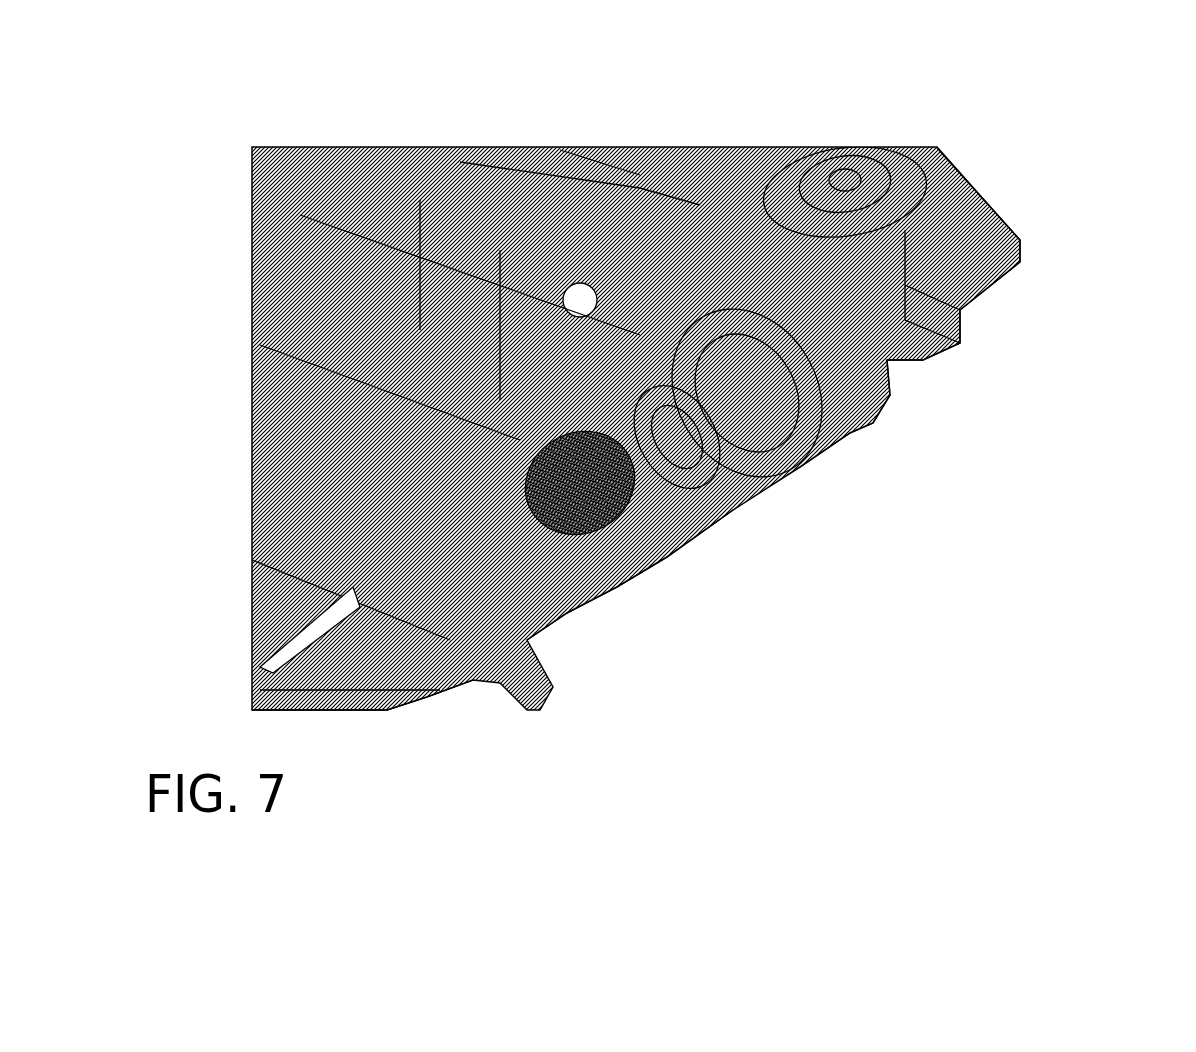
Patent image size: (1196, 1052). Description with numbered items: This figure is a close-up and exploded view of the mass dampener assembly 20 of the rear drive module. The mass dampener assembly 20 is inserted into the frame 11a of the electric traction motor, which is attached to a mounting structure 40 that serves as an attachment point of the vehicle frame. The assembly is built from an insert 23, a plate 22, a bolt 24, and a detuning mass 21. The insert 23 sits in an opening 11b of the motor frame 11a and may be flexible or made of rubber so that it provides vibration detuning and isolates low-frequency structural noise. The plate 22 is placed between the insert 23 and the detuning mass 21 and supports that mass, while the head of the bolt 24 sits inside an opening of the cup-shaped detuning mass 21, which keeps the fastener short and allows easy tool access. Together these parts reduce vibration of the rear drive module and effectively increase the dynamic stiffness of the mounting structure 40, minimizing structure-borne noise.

The frame 11a is at (937, 350).
The opening 11b is at (628, 160).
The mass dampener assembly 20 is at (1014, 485).
The detuning mass 21 is at (625, 585).
The plate 22 is at (730, 517).
The insert 23 is at (827, 450).
The bolt 24 is at (383, 712).
The mounting structure 40 is at (979, 161).